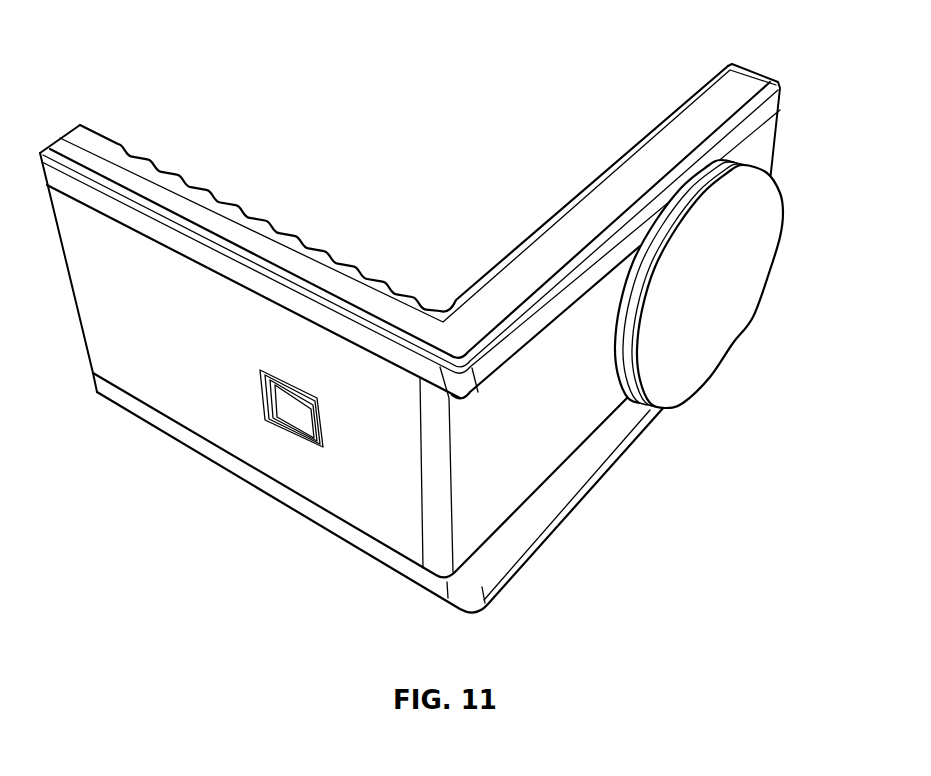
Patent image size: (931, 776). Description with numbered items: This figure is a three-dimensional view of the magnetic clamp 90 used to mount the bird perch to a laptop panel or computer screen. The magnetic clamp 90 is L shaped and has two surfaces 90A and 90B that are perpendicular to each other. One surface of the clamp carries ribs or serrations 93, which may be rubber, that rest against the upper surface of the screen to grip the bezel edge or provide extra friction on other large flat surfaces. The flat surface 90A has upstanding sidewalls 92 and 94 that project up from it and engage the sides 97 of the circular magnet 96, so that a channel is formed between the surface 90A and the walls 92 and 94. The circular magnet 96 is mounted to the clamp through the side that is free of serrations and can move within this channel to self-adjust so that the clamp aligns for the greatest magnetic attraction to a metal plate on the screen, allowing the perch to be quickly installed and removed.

The magnetic clamp 90 is at (613, 197).
The surface 90A is at (553, 443).
The surface 90B is at (213, 417).
The upstanding sidewall 92 is at (590, 449).
The ribs or serrations 93 is at (330, 256).
The upstanding sidewall 94 is at (520, 355).
The circular magnet 96 is at (685, 320).
The sides of the circular magnet 97 is at (617, 293).